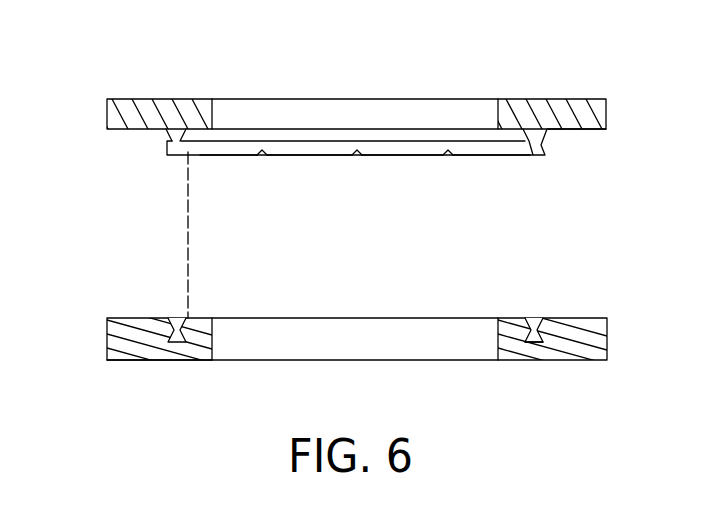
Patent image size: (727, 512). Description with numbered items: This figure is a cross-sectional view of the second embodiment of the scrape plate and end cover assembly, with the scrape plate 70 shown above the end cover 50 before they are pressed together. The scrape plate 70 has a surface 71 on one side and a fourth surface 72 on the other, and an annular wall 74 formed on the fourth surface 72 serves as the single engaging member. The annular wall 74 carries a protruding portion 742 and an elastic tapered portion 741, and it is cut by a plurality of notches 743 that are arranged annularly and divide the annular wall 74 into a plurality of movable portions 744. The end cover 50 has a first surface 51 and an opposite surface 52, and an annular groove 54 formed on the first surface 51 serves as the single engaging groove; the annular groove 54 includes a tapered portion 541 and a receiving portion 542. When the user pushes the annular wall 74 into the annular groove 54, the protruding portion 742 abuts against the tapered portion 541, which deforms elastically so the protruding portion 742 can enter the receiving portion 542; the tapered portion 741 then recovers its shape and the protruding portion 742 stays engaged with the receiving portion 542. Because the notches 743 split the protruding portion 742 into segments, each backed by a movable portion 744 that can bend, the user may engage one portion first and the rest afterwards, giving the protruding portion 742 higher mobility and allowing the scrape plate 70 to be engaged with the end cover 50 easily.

The scrape plate 70 is at (357, 144).
The upper plate end portion 71 is at (581, 99).
The fourth surface 72 is at (597, 130).
The tapered portion 741 is at (151, 128).
The protruding portion 742 is at (153, 152).
The annular wall 74 is at (210, 153).
The notches 743 is at (356, 156).
The movable portions 744 is at (488, 157).
The end cover 50 is at (355, 339).
The first surface 51 is at (122, 318).
The lower plate bottom surface 52 is at (117, 361).
The annular groove 54 is at (180, 345).
The tapered portion 541 is at (533, 318).
The receiving portion 542 is at (535, 352).